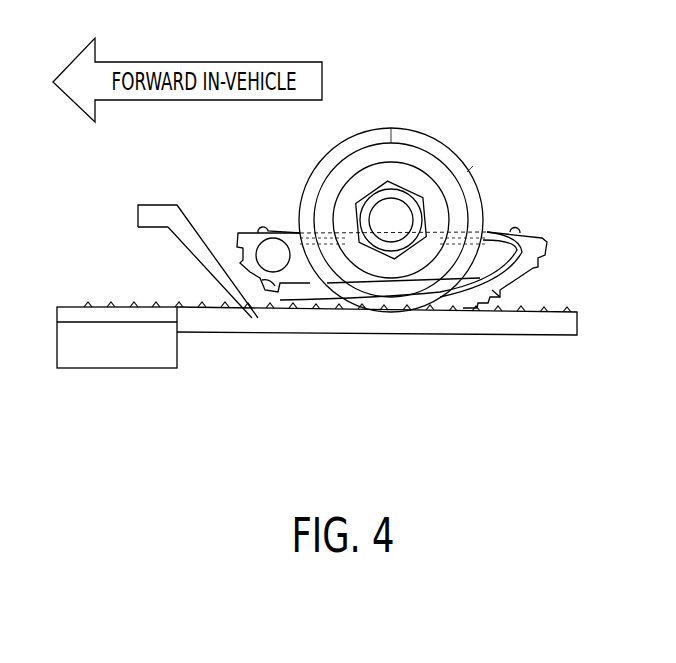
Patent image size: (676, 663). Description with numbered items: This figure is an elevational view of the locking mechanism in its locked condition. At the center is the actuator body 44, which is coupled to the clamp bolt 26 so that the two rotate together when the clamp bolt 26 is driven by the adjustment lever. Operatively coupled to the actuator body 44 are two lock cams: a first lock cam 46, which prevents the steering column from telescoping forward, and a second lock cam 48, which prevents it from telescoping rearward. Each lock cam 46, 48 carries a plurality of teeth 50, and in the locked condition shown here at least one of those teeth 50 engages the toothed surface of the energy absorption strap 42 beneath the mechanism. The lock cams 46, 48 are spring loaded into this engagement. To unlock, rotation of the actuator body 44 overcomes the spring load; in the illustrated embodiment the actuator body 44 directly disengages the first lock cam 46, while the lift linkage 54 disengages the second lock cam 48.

The clamp bolt 26 is at (392, 220).
The energy absorption strap 42 is at (420, 320).
The actuator body 44 is at (350, 163).
The first lock cam 46 is at (531, 222).
The second lock cam 48 is at (248, 222).
The teeth 50 is at (262, 290).
The lift linkage 54 is at (170, 224).